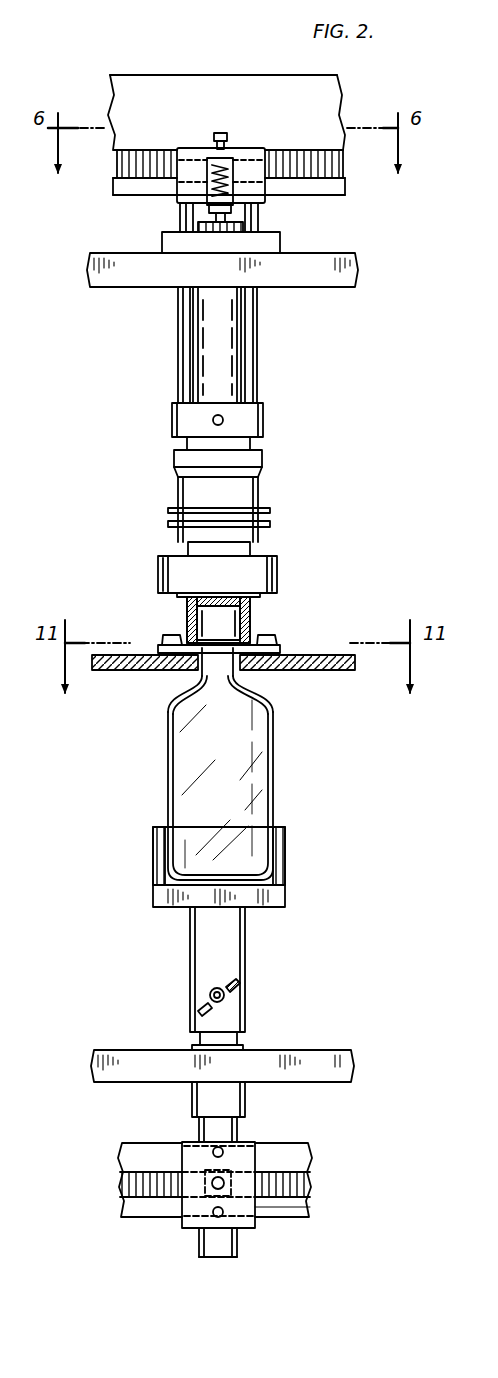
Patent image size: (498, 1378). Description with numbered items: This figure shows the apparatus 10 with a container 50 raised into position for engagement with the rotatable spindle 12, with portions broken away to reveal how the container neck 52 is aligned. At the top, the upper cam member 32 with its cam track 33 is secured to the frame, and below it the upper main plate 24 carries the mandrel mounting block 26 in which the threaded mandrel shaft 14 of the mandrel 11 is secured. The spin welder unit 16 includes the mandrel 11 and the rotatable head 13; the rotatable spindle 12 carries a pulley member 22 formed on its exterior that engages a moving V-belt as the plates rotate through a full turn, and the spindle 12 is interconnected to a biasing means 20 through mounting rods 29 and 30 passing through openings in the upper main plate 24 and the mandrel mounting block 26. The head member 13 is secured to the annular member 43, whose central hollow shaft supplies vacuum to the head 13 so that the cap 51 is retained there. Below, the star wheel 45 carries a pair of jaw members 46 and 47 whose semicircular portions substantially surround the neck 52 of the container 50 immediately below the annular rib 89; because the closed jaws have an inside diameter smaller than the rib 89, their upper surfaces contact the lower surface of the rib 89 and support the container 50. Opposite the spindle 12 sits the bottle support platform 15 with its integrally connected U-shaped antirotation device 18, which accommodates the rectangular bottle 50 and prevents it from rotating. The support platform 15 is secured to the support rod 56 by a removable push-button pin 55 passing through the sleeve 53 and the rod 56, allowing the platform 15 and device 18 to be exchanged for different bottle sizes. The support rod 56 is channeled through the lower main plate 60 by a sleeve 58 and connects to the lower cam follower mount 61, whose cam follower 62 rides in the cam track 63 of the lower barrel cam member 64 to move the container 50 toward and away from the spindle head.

The apparatus 10 is at (283, 448).
The mandrel 11 is at (264, 421).
The rotatable spindle 12 is at (188, 493).
The head member 13 is at (186, 608).
The threaded mandrel shaft 14 is at (215, 360).
The bottle support platform 15 is at (190, 899).
The spin welder unit 16 is at (172, 418).
The antirotation device 18 is at (285, 853).
The biasing means 20 is at (175, 203).
The pulley member 22 is at (268, 526).
The upper main plate 24 is at (325, 276).
The mandrel mounting block 26 is at (280, 246).
The mounting rod 29 is at (182, 357).
The mounting rod 30 is at (252, 328).
The upper cam member 32 is at (268, 91).
The cam track 33 is at (310, 178).
The annular member 43 is at (278, 571).
The star wheel 45 is at (330, 671).
The jaw member 46 is at (258, 651).
The jaw member 47 is at (198, 663).
The container 50 is at (273, 739).
The cap 51 is at (226, 626).
The neck 52 is at (236, 673).
The sleeve 53 is at (236, 951).
The pin 55 is at (196, 1004).
The support rod 56 is at (221, 1136).
The sleeve 58 is at (246, 1109).
The lower main plate 60 is at (285, 1053).
The lower cam follower mount 61 is at (194, 1152).
The cam follower 62 is at (206, 1186).
The cam track 63 is at (290, 1196).
The lower barrel cam member 64 is at (275, 1216).
The annular rib 89 is at (188, 704).